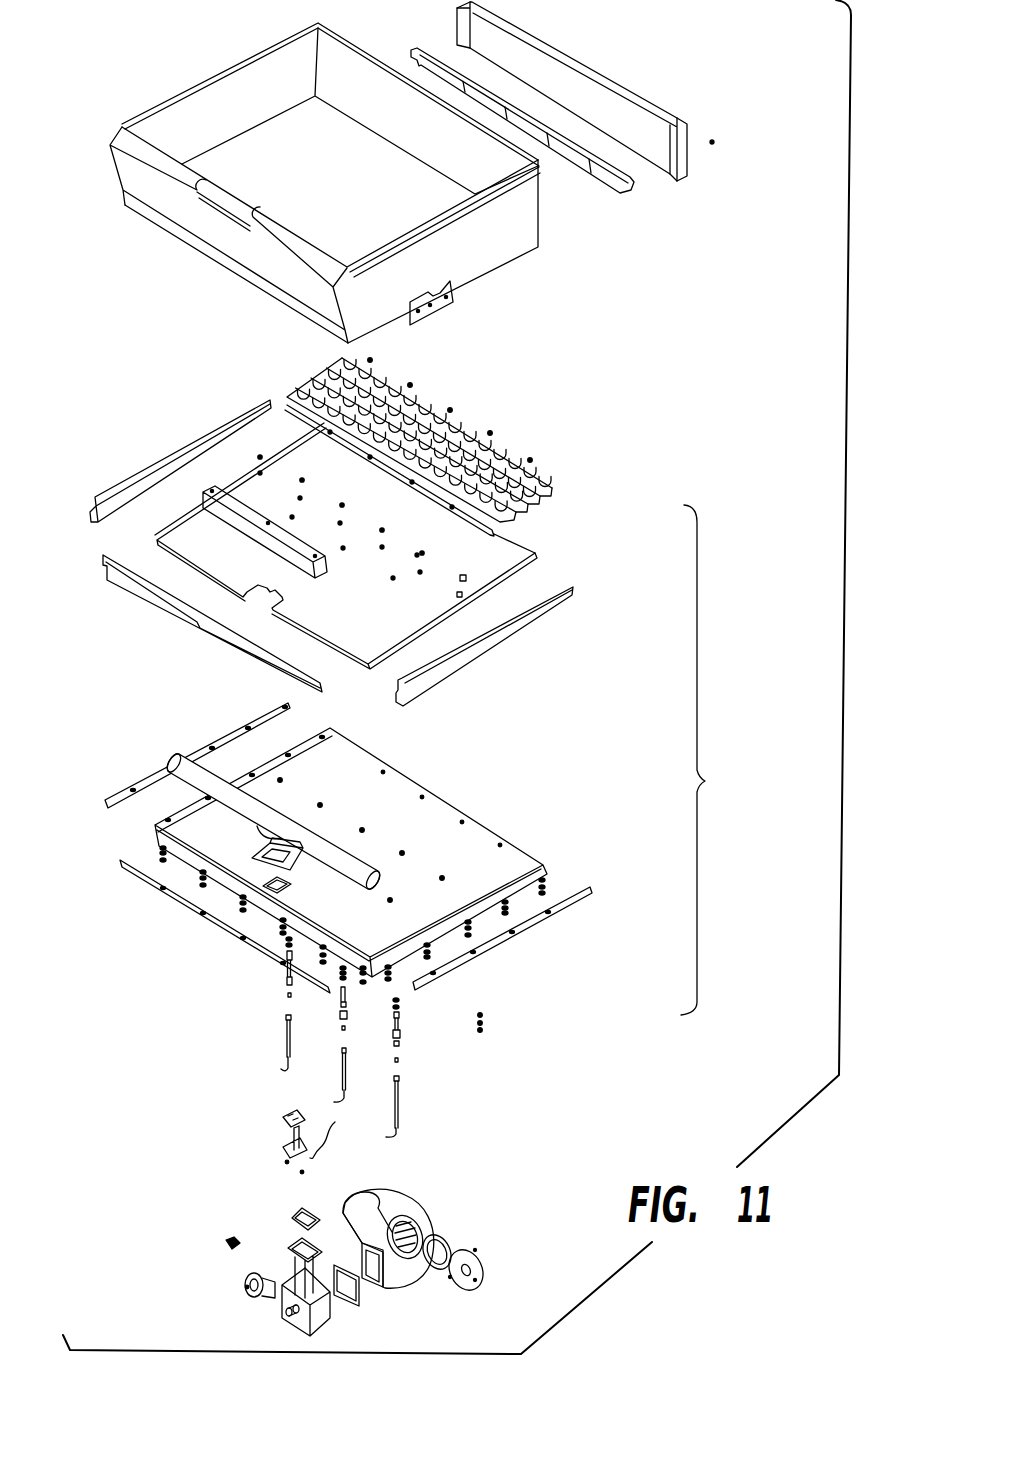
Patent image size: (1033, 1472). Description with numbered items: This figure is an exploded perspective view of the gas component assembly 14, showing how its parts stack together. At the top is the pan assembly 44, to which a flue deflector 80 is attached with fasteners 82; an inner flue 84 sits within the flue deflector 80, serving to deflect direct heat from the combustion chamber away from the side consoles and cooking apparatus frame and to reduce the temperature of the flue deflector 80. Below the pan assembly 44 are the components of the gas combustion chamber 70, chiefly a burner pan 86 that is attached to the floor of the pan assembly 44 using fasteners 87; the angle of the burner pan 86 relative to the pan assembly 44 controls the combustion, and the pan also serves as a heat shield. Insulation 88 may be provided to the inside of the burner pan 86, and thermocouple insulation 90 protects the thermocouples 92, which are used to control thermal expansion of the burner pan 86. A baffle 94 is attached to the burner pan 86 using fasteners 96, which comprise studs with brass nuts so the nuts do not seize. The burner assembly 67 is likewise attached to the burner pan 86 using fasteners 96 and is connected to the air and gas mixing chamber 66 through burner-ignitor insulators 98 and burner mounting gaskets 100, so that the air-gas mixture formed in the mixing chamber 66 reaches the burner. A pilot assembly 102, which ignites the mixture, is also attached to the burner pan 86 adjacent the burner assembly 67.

The gas component assembly 14 is at (587, 401).
The pan assembly 44 is at (257, 163).
The air and gas mixing chamber 66 is at (320, 1315).
The burner assembly 67 is at (180, 762).
The gas combustion chamber 70 is at (709, 760).
The flue deflector 80 is at (575, 78).
The fasteners 82 is at (722, 122).
The inner flue 84 is at (641, 188).
The burner pan 86 is at (470, 850).
The fasteners 87 is at (547, 884).
The insulation 88 is at (157, 462).
The thermocouple insulation 90 is at (255, 533).
The thermocouples 92 is at (398, 1102).
The baffle 94 is at (455, 432).
The fasteners 96 is at (463, 578).
The burner-ignitor insulators 98 is at (258, 868).
The burner mounting gaskets 100 is at (292, 882).
The pilot assembly 102 is at (278, 1131).